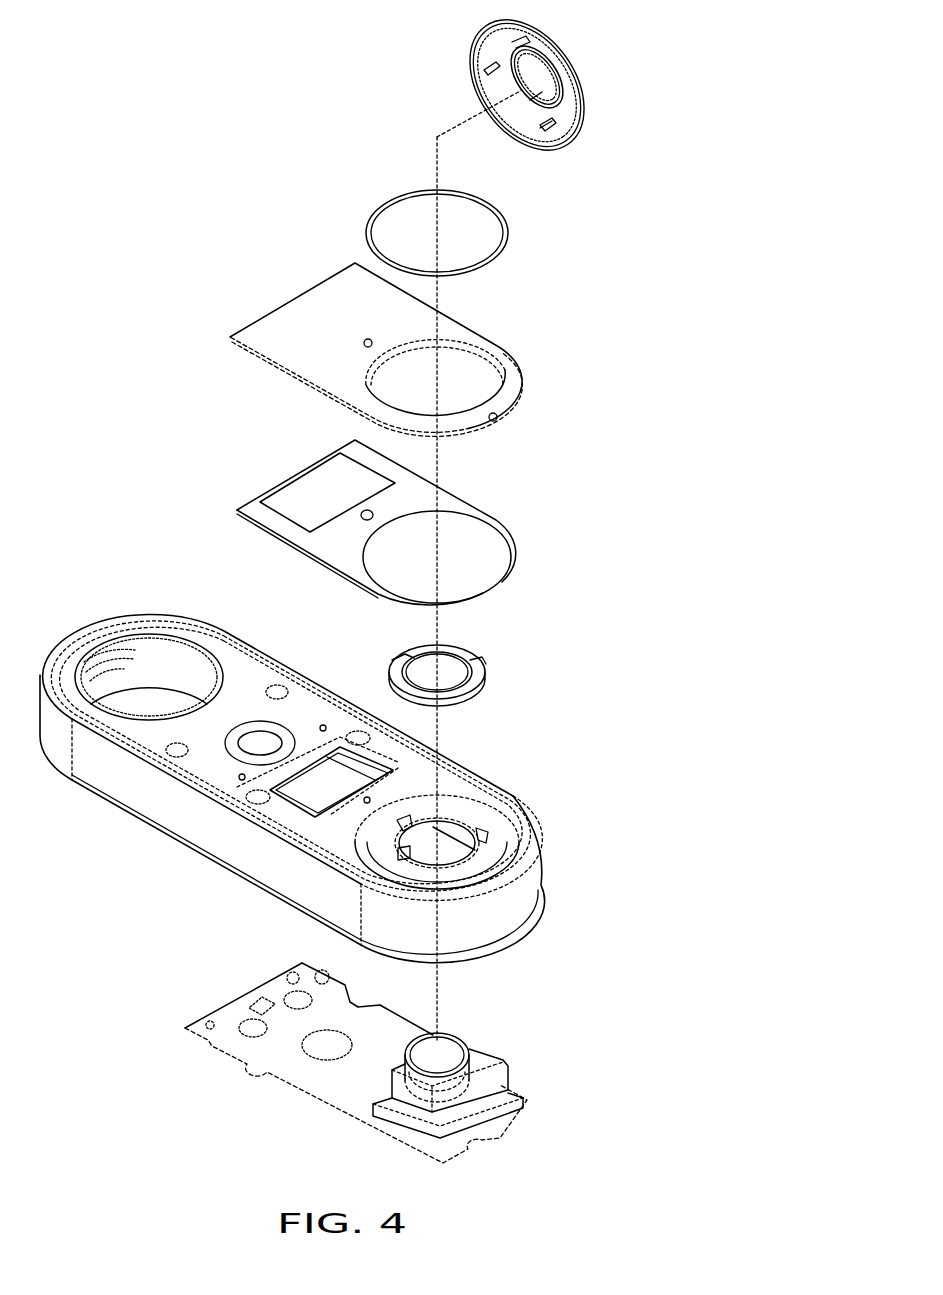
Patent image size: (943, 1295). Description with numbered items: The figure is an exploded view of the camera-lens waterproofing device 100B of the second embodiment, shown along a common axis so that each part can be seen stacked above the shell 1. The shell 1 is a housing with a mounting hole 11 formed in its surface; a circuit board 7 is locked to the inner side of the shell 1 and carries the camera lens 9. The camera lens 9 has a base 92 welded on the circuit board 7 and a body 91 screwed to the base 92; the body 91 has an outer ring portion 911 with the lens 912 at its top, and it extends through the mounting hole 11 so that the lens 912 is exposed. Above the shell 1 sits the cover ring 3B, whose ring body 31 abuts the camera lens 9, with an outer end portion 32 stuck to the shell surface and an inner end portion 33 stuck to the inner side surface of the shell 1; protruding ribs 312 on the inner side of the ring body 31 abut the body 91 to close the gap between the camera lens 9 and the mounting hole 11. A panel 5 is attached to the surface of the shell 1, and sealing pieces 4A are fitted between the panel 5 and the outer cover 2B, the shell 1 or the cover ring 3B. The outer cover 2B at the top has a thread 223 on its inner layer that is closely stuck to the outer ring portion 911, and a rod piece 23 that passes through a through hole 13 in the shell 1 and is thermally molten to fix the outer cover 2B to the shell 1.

The camera-lens waterproofing device 100B is at (103, 389).
The outer cover 2B is at (474, 48).
The thread 223 is at (534, 98).
The rod piece 23 is at (543, 133).
The sealing pieces 4A is at (368, 236).
The panel 5 is at (285, 342).
The cover ring 3B is at (400, 660).
The ring body 31 is at (491, 668).
The outer end portion 32 is at (456, 652).
The protruding ribs 312 is at (470, 668).
The inner end portion 33 is at (456, 704).
The shell 1 is at (137, 793).
The mounting hole 11 is at (462, 826).
The through hole 13 is at (486, 835).
The circuit board 7 is at (292, 1075).
The camera lens 9 is at (486, 1074).
The lens 912 is at (481, 1041).
The outer ring portion 911 is at (470, 1060).
The body 91 is at (458, 1092).
The base 92 is at (482, 1103).